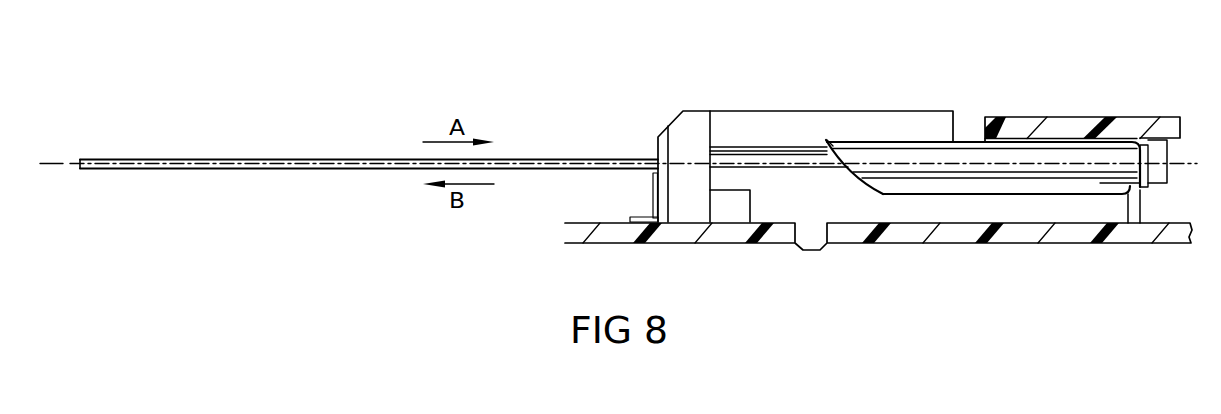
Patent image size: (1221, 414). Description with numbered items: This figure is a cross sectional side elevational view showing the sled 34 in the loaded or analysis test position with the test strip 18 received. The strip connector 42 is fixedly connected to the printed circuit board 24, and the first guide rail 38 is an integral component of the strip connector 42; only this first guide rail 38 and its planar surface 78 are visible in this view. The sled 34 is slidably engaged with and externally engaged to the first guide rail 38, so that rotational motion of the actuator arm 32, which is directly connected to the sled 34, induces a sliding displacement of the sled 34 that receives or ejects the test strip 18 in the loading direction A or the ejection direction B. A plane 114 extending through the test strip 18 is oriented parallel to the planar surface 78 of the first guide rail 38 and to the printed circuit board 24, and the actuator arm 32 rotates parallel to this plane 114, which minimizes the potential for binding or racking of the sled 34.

The plane 114 is at (63, 164).
The test strip 18 is at (345, 168).
The strip connector 42 is at (762, 78).
The first guide rail 38 is at (755, 160).
The planar surface 78 is at (806, 130).
The sled 34 is at (1015, 148).
The actuator arm 32 is at (1123, 127).
The printed circuit board 24 is at (1072, 233).